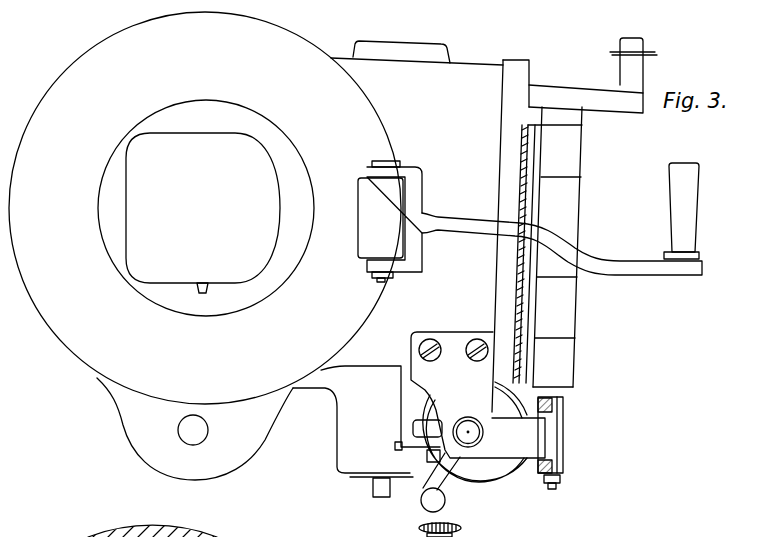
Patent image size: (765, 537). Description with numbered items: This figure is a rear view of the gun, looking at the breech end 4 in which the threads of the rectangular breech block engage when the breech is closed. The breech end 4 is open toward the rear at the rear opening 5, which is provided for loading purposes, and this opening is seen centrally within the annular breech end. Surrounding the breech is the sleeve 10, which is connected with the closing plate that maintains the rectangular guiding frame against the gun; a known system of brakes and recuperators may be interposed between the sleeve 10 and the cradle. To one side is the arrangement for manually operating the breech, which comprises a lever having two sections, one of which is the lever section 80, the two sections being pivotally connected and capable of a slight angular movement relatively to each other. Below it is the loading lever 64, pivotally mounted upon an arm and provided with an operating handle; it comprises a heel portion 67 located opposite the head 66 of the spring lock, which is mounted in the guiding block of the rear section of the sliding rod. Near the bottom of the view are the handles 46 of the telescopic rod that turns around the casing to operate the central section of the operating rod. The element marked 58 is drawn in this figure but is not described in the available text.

The sleeve 10 is at (78, 333).
The breech end 4 is at (264, 288).
The rear opening 5 is at (157, 262).
The lever section 80 is at (625, 103).
The loading lever 64 is at (655, 262).
The head of spring lock 66 is at (560, 440).
The heel portion 67 is at (543, 476).
The handles 46 is at (428, 503).
The knurled nut 58 is at (401, 530).